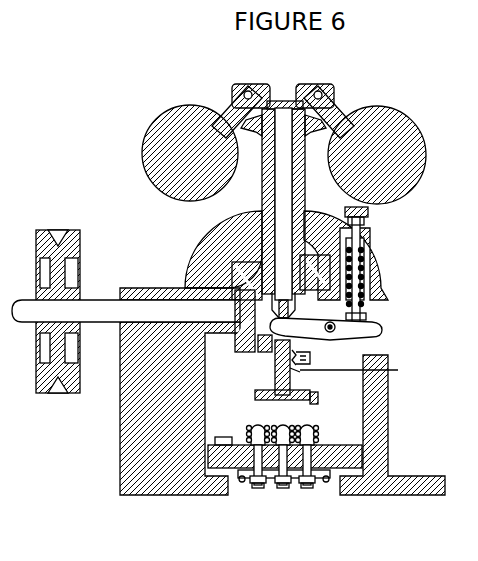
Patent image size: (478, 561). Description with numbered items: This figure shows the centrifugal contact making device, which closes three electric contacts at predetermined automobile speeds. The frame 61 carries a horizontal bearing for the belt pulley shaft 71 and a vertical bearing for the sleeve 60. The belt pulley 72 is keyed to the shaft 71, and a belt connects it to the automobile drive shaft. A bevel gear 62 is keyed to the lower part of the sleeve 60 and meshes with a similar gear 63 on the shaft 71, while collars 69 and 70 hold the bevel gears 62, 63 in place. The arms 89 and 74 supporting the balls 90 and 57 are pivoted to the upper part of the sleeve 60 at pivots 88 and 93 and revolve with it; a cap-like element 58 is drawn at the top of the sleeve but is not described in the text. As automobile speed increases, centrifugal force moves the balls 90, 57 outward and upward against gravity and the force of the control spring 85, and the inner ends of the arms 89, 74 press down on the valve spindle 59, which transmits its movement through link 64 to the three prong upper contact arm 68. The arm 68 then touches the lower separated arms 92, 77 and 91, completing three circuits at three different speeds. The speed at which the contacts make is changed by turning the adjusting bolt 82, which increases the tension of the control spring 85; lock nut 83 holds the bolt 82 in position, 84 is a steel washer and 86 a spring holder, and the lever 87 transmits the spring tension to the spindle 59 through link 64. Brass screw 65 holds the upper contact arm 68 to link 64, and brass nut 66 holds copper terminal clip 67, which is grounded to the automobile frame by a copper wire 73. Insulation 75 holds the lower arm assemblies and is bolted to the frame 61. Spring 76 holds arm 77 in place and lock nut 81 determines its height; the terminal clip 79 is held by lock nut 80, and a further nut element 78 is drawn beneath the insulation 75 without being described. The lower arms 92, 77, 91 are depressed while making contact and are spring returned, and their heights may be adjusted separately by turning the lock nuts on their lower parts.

The ball 57 is at (428, 152).
The cap 58 is at (293, 100).
The valve spindle 59 is at (292, 148).
The sleeve 60 is at (262, 140).
The frame 61 is at (262, 197).
The bevel gear 62 is at (312, 270).
The bevel gear 63 is at (240, 347).
The link 64 is at (277, 365).
The brass screw 65 is at (328, 340).
The brass nut 66 is at (310, 362).
The copper terminal clip 67 is at (300, 372).
The three prong upper contact arm 68 is at (318, 398).
The collar 69 is at (292, 306).
The collar 70 is at (272, 338).
The belt pulley shaft 71 is at (126, 362).
The belt pulley 72 is at (86, 243).
The copper wire 73 is at (396, 371).
The arm 74 is at (340, 103).
The insulation 75 is at (236, 445).
The spring 76 is at (250, 438).
The lower arm 77 is at (258, 424).
The nut 78 is at (242, 482).
The terminal clip 79 is at (258, 488).
The lock nut 80 is at (283, 488).
The lock nut 81 is at (307, 488).
The adjusting bolt 82 is at (370, 212).
The lock nut 83 is at (366, 222).
The steel washer 84 is at (370, 245).
The control spring 85 is at (365, 308).
The spring holder 86 is at (368, 318).
The lever 87 is at (362, 330).
The pivot 88 is at (247, 84).
The arm 89 is at (225, 106).
The ball 90 is at (142, 153).
The lower arm 91 is at (283, 425).
The lower arm 92 is at (312, 426).
The pivot 93 is at (320, 84).